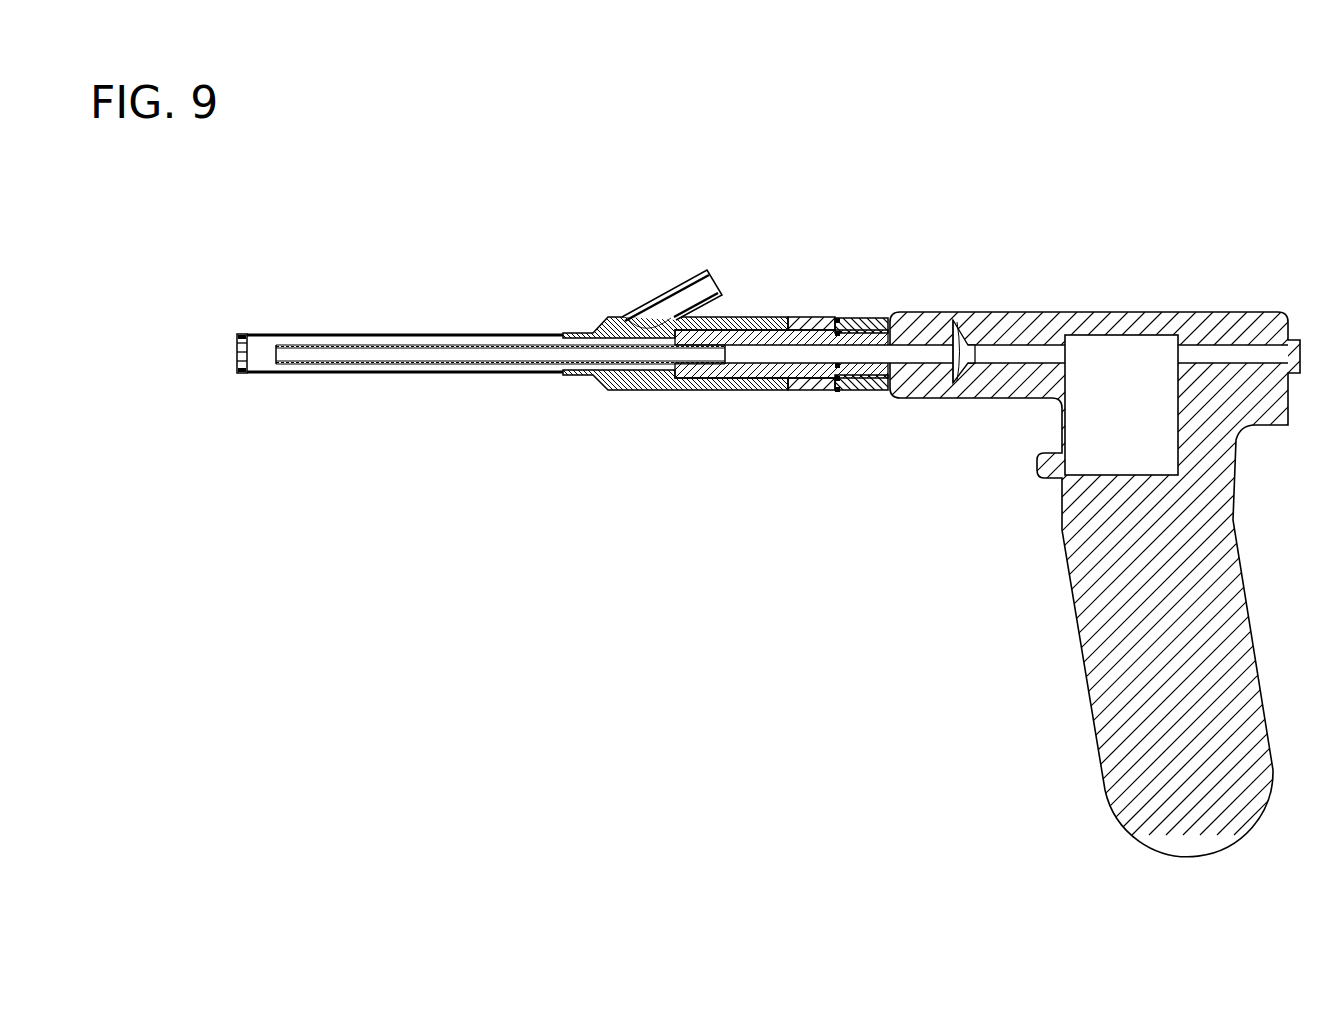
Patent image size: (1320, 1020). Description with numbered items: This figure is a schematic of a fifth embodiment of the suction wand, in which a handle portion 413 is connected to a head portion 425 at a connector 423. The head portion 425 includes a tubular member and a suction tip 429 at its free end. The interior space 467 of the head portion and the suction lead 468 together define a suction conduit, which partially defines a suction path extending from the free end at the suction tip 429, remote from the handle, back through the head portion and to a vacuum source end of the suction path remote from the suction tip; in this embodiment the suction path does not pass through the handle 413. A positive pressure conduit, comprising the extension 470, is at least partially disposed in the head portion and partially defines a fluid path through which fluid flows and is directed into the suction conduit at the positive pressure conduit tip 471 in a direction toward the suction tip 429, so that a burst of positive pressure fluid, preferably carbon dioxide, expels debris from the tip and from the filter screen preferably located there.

The head portion 425 is at (883, 253).
The handle portion 413 is at (1285, 253).
The suction tip 429 is at (237, 355).
The positive pressure conduit tip 471 is at (285, 355).
The interior space 467 is at (358, 365).
The extension 470 is at (445, 355).
The suction lead 468 is at (678, 283).
The connector 423 is at (872, 390).